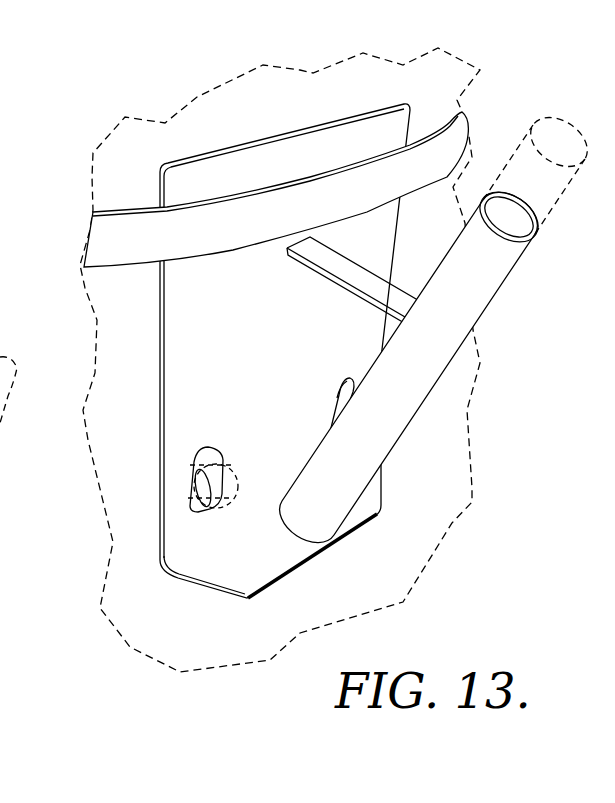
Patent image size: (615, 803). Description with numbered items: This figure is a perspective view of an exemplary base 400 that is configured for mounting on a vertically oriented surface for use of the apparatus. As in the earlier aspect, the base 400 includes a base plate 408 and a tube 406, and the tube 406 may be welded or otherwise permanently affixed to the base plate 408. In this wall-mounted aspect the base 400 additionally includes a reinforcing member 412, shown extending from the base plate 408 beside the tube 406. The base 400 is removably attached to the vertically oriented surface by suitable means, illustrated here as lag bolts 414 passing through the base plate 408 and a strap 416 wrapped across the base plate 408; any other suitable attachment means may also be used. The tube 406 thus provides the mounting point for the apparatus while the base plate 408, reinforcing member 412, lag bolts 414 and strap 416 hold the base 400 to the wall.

The base 400 is at (62, 126).
The tube 406 is at (488, 283).
The base plate 408 is at (337, 140).
The reinforcing member 412 is at (337, 268).
The lag bolts 414 is at (213, 508).
The straps 416 is at (458, 143).